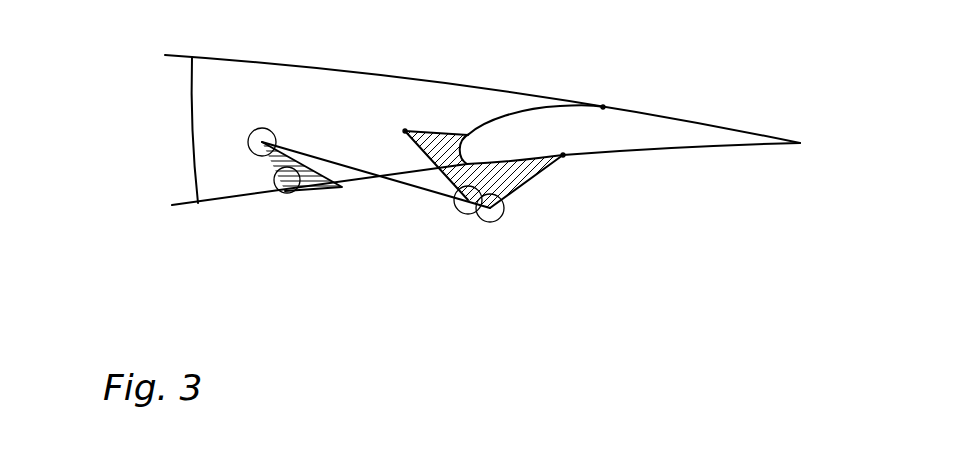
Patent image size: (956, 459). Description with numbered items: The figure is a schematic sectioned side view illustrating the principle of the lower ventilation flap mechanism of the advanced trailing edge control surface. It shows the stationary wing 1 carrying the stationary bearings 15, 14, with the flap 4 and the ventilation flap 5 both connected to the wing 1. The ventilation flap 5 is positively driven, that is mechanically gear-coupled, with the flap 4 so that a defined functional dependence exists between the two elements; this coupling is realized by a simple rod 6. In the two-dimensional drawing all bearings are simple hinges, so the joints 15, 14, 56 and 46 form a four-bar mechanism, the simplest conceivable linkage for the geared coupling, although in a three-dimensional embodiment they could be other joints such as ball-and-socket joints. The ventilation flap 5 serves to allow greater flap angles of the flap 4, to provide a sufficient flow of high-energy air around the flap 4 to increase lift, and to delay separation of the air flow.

The stationary wing 1 is at (190, 133).
The flap 4 is at (597, 152).
The ventilation flap 5 is at (355, 184).
The rod 6 is at (332, 160).
The stationary bearing 14 is at (468, 199).
The stationary bearing 15 is at (287, 181).
The joint 46 is at (490, 209).
The joint 56 is at (262, 142).